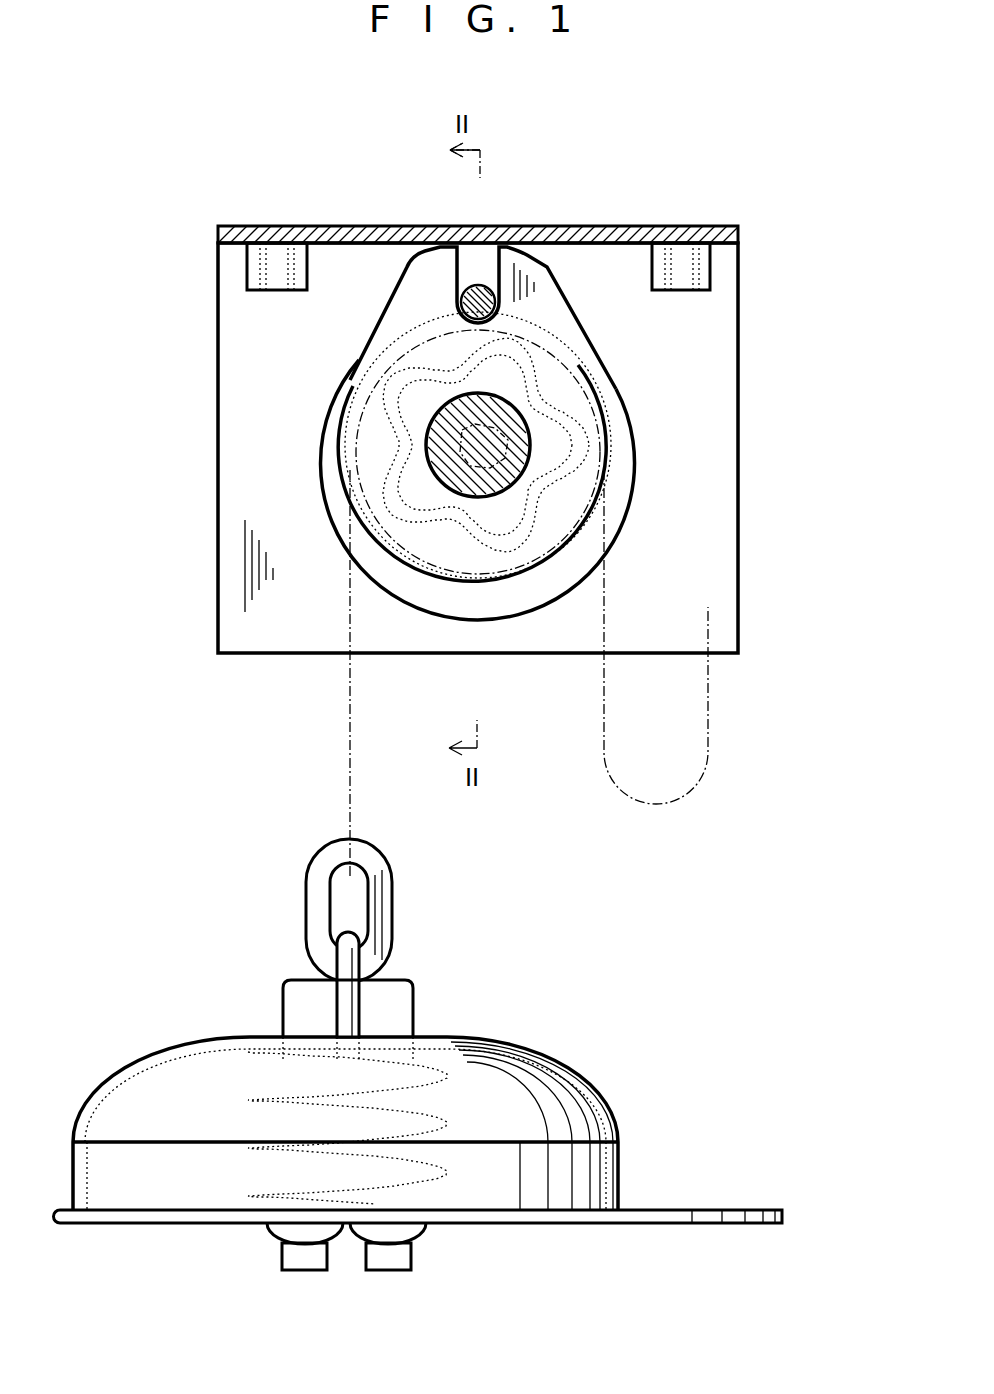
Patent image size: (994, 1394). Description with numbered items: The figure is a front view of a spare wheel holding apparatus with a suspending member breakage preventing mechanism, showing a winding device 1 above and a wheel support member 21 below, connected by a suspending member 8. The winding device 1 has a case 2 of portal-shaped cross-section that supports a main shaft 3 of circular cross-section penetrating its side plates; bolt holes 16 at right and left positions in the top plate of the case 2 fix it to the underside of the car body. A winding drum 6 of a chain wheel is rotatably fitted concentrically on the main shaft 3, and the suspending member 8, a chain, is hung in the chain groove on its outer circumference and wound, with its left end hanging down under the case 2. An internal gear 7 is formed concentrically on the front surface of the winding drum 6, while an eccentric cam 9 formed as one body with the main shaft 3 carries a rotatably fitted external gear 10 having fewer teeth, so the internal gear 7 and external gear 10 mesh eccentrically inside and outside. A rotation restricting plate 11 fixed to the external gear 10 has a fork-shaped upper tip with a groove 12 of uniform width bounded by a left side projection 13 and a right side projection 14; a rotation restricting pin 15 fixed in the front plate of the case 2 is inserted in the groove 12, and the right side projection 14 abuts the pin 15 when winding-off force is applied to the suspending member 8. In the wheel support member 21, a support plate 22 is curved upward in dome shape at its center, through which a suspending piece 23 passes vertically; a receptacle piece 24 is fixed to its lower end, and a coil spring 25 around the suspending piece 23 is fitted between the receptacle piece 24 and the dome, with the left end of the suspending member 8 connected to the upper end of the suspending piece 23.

The winding device 1 is at (781, 459).
The case 2 is at (335, 226).
The main shaft 3 is at (443, 445).
The winding drum 6 is at (420, 612).
The internal gear 7 is at (540, 545).
The suspending member 8 is at (350, 805).
The eccentric cam 9 is at (440, 405).
The external gear 10 is at (530, 507).
The rotation restricting plate 11 is at (370, 320).
The groove 12 is at (473, 265).
The left side projection 13 is at (420, 258).
The right side projection 14 is at (540, 268).
The rotation restricting pin 15 is at (484, 288).
The bolt holes 16 is at (800, 308).
The wheel support member 21 is at (666, 1152).
The support plate 22 is at (733, 1226).
The suspending piece 23 is at (478, 1280).
The receptacle piece 24 is at (447, 1207).
The coil spring 25 is at (470, 1070).